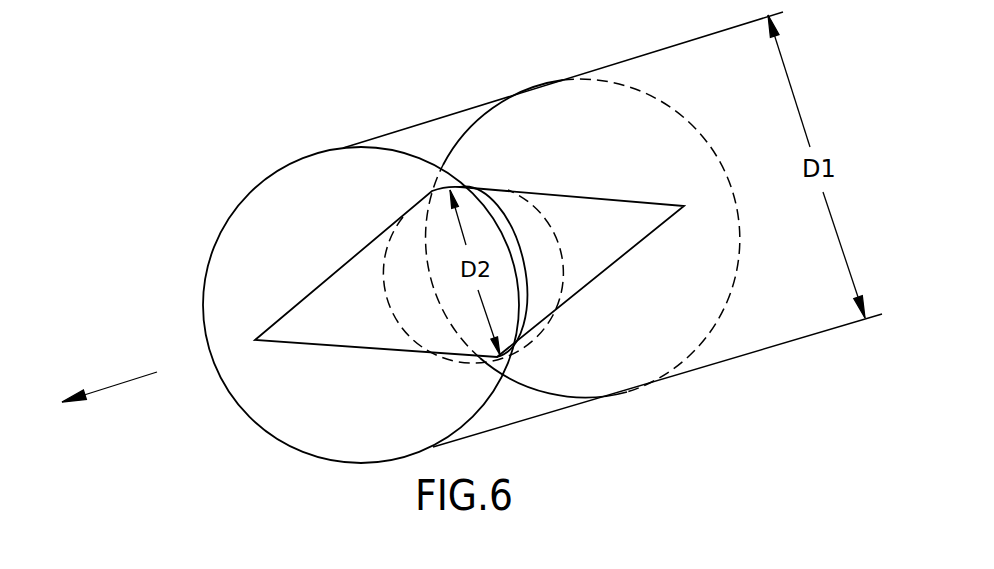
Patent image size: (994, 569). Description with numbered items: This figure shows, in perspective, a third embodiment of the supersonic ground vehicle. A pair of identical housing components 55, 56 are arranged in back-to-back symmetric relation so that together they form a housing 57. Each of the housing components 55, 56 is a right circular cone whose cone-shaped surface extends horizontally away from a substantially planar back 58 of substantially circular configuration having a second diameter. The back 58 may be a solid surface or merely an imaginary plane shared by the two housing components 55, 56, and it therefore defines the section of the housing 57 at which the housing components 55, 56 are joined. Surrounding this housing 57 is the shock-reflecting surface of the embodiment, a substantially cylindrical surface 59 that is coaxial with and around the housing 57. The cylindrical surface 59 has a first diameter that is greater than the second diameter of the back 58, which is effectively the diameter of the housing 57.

The housing component 55 is at (338, 297).
The housing component 56 is at (597, 198).
The housing 57 is at (707, 258).
The back 58 is at (410, 318).
The cylindrical surface 59 is at (433, 136).